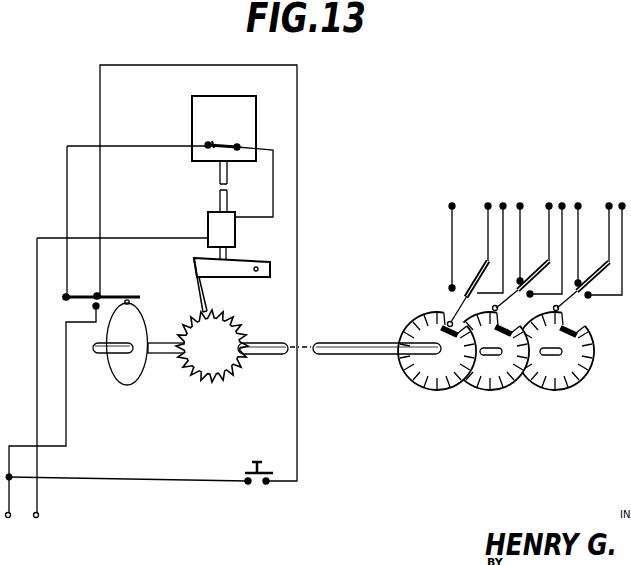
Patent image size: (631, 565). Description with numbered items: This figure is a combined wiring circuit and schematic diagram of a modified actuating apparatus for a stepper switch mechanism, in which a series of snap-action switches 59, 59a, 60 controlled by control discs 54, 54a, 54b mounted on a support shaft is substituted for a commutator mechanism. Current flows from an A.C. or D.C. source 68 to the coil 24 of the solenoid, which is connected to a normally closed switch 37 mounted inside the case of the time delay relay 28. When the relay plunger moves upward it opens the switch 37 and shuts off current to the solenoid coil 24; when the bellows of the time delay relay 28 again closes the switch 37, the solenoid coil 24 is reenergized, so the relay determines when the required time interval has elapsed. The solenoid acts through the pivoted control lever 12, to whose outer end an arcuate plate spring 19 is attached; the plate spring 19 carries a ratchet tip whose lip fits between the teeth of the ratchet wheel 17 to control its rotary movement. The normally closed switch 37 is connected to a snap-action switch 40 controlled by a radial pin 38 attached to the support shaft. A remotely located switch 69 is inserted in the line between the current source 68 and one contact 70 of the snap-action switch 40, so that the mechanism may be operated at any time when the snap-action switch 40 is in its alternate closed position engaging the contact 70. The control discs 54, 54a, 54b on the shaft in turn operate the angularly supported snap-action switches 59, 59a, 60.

The pivoted control lever 12 is at (257, 278).
The ratchet wheel 17 is at (204, 372).
The plate spring 19 is at (205, 295).
The solenoid coil 24 is at (235, 235).
The time delay relay 28 is at (242, 98).
The normally closed switch 37 is at (218, 144).
The radial pin 38 is at (130, 303).
The snap-action switch 40 is at (120, 296).
The control disc 54 is at (422, 392).
The control disc 54a is at (498, 391).
The control disc 54b is at (578, 392).
The snap-action switch 59 is at (478, 268).
The snap-action switch 59a is at (537, 258).
The snap-action switch 60 is at (597, 262).
The current source 68 is at (22, 517).
The remotely located switch 69 is at (252, 484).
The contact 70 is at (98, 295).